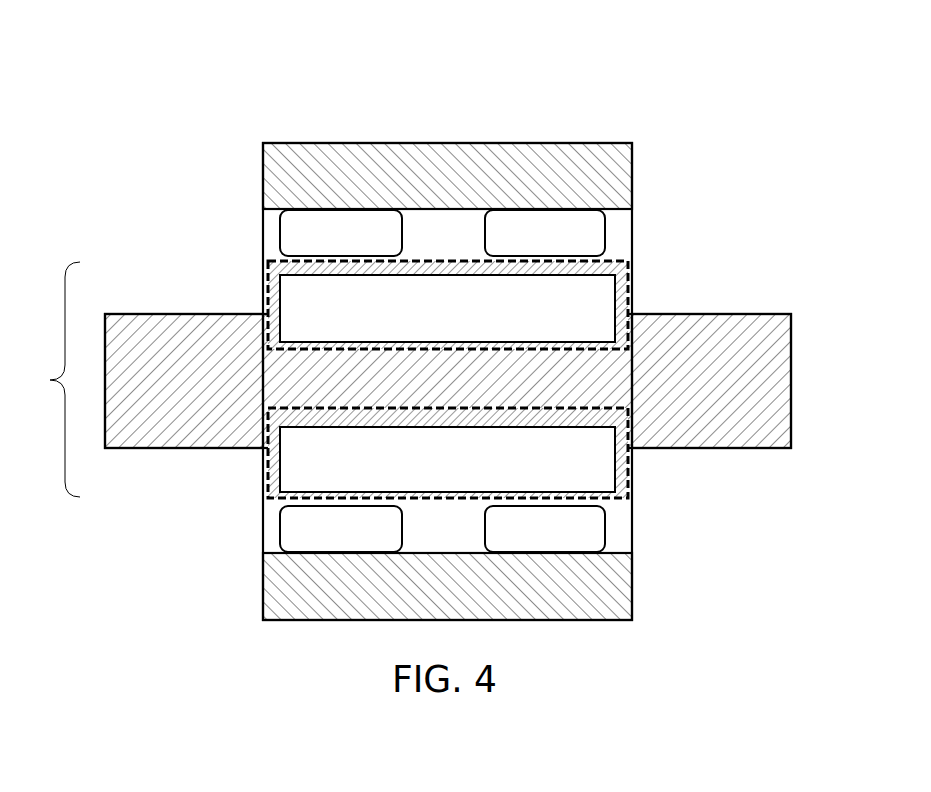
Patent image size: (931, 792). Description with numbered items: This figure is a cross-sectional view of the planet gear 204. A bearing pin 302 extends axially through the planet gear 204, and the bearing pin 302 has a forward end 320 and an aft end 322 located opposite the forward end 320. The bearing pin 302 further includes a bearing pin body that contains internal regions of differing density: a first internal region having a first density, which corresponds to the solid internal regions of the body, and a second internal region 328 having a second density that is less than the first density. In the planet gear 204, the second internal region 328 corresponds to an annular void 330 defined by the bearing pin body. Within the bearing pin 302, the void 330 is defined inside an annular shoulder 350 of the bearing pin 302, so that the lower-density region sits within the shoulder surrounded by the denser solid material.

The planet gear 204 is at (261, 86).
The bearing pin 302 is at (50, 380).
The forward end 320 is at (175, 432).
The aft end 322 is at (780, 362).
The second internal region 328 is at (637, 287).
The annular void 330 is at (447, 295).
The annular shoulder 350 is at (263, 280).